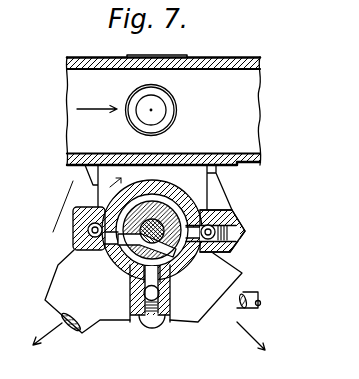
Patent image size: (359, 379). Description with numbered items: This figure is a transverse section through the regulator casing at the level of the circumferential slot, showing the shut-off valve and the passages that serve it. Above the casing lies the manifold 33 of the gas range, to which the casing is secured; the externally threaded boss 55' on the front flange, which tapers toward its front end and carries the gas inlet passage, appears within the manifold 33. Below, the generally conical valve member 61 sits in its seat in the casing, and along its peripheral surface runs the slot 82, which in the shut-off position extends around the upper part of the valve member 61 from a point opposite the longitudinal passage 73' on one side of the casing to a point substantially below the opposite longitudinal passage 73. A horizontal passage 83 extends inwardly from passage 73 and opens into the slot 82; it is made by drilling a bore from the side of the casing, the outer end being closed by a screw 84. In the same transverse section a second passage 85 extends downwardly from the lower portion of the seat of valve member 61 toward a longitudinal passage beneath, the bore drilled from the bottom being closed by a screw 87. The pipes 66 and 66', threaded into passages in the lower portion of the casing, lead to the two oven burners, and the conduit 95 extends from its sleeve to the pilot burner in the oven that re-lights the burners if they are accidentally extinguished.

The manifold 33 is at (247, 61).
The boss 55' is at (100, 108).
The slot 82 is at (133, 210).
The valve member 61 is at (170, 215).
The longitudinal passage 73 is at (236, 239).
The longitudinal passage 73' is at (63, 233).
The horizontal passage 83 is at (210, 210).
The screw 84 is at (237, 230).
The second passage 85 is at (124, 310).
The screw 87 is at (153, 326).
The pipe 66 is at (240, 325).
The pipe 66' is at (45, 314).
The conduit 95 is at (260, 308).